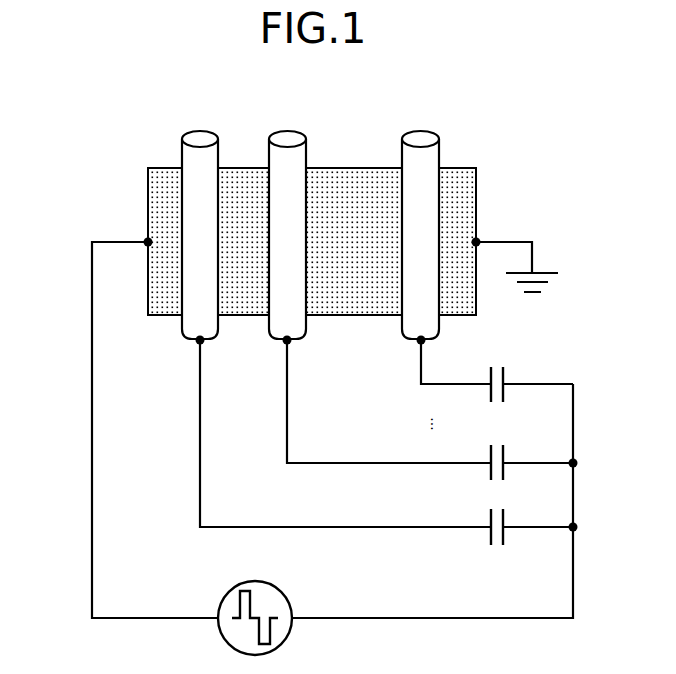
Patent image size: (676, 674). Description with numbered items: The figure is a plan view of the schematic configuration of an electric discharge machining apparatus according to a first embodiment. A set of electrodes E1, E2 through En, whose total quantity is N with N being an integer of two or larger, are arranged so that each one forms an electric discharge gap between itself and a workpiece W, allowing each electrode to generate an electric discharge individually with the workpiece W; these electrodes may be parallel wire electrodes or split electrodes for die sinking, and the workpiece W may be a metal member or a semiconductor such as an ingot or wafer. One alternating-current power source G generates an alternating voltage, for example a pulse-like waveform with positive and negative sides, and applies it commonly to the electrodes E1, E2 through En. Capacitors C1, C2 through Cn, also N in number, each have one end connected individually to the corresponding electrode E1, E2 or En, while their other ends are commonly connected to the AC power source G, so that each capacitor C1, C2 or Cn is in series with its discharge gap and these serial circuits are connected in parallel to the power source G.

The workpiece W is at (147, 181).
The first electrode E1 is at (197, 130).
The second electrode E2 is at (285, 130).
The n-th electrode En is at (419, 130).
The n-th capacitor Cn is at (504, 375).
The second capacitor C2 is at (504, 454).
The first capacitor C1 is at (504, 518).
The AC power source G is at (280, 587).